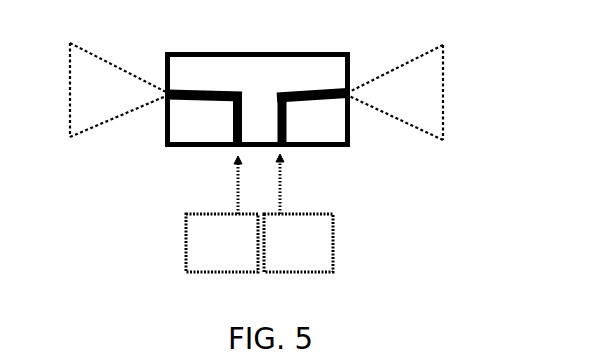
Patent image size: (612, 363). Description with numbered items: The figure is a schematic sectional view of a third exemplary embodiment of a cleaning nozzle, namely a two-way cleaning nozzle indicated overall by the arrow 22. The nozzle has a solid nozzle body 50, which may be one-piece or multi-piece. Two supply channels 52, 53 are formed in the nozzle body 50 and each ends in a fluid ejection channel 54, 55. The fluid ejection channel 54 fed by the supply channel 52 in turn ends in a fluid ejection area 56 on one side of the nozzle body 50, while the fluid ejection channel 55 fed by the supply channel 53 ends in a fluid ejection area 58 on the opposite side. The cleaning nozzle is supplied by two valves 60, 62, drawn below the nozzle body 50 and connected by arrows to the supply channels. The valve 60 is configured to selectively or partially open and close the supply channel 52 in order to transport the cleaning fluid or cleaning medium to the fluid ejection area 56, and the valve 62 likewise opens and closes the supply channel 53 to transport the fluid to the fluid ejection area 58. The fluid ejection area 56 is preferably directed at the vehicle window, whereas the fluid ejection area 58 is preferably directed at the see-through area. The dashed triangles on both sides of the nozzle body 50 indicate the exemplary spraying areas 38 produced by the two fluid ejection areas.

The nozzle assembly 22 is at (262, 114).
The spraying area 38 is at (83, 50).
The nozzle body 50 is at (278, 62).
The supply channel 52 is at (287, 123).
The supply channel 53 is at (231, 143).
The fluid ejection channel 54 is at (312, 92).
The fluid ejection channel 55 is at (210, 97).
The fluid ejection area 56 is at (353, 100).
The fluid ejection area 58 is at (168, 92).
The valve 60 is at (322, 253).
The valve 62 is at (193, 247).